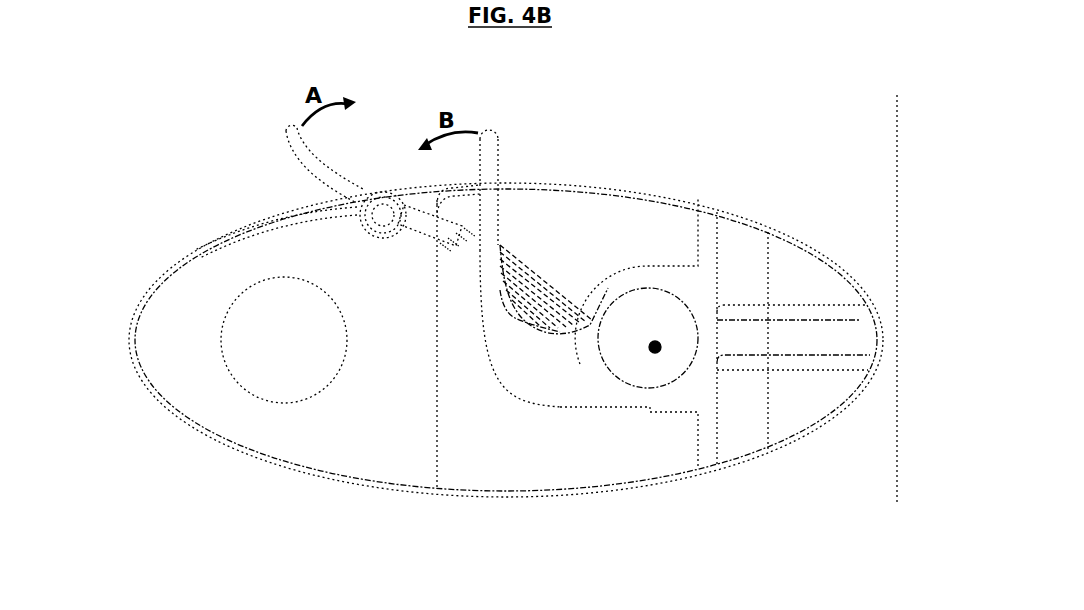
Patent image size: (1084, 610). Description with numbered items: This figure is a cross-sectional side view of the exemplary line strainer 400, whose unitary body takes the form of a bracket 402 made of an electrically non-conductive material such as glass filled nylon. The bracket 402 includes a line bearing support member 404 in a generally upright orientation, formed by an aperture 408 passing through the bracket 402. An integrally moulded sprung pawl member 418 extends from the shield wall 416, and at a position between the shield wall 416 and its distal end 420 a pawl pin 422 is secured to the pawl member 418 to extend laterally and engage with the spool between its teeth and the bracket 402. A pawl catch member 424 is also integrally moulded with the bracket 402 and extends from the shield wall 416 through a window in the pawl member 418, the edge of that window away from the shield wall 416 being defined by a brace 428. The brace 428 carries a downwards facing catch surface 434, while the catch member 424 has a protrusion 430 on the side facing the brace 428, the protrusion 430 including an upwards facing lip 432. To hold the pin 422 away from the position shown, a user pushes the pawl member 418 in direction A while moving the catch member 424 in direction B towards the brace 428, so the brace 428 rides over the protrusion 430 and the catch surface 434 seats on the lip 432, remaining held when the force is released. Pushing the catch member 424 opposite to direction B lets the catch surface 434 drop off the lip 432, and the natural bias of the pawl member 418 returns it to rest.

The line strainer 400 is at (820, 150).
The bracket 402 is at (622, 491).
The line bearing support member 404 is at (860, 258).
The aperture 408 is at (657, 348).
The shield wall 416 is at (640, 267).
The pawl member 418 is at (535, 306).
The distal end 420 is at (287, 155).
The pawl pin 422 is at (383, 205).
The pawl catch member 424 is at (497, 130).
The brace 428 is at (436, 232).
The protrusion 430 is at (470, 256).
The lip 432 is at (470, 222).
The catch surface 434 is at (455, 250).